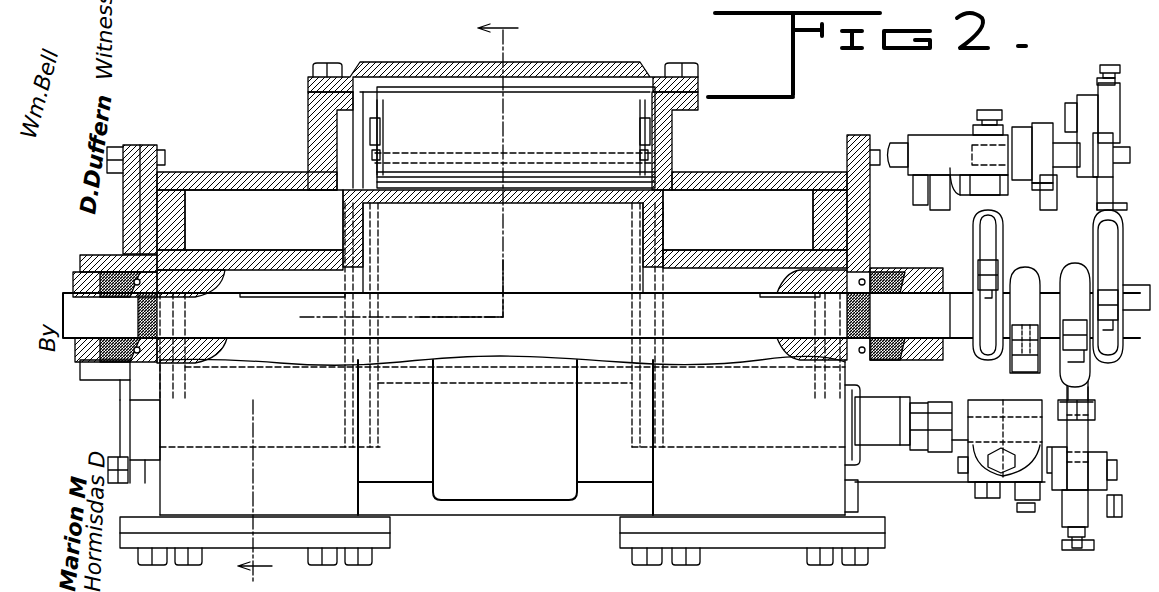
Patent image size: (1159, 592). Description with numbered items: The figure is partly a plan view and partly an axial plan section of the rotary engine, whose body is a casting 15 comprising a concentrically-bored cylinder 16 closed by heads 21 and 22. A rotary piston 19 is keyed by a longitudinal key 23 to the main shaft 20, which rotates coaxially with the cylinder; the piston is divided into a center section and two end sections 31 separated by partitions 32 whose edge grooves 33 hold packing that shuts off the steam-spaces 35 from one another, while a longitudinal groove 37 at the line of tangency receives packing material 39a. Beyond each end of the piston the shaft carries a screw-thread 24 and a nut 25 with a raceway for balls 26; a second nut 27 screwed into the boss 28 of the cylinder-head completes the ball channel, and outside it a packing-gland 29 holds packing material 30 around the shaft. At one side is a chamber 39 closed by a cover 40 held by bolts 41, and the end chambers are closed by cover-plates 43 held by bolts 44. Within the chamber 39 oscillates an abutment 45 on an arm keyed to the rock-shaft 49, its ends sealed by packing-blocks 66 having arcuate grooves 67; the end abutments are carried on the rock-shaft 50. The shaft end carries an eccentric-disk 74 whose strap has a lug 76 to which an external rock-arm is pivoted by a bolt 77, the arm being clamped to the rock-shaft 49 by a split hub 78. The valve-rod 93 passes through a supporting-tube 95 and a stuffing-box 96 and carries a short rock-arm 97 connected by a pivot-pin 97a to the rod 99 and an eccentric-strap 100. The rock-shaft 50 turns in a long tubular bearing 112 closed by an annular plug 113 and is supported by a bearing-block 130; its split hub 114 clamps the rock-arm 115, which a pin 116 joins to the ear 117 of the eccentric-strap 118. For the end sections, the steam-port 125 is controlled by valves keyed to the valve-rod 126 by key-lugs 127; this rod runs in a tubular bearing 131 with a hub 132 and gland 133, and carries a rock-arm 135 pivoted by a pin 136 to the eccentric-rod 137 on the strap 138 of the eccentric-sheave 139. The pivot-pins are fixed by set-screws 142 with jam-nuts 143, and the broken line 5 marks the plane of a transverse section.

The section line 5 is at (380, 300).
The casting 15 is at (412, 470).
The cylinder 16 is at (243, 172).
The rotary piston 19 is at (200, 252).
The main shaft 20 is at (560, 305).
The cylinder head 21 is at (862, 135).
The cylinder head 22 is at (138, 145).
The longitudinal key 23 is at (245, 297).
The screw-thread 24 is at (180, 317).
The nut 25 is at (135, 275).
The balls 26 is at (135, 265).
The nut 27 is at (118, 378).
The boss 28 is at (80, 263).
The packing-gland 29 is at (73, 283).
The packing material 30 is at (73, 290).
The end section 31 is at (295, 262).
The partition 32 is at (195, 190).
The groove 33 is at (200, 172).
The steam-space 35 is at (499, 220).
The longitudinal groove 37 is at (538, 203).
The chamber 39 is at (570, 88).
The packing material 39a is at (475, 203).
The cover 40 is at (434, 62).
The bolts 41 is at (328, 63).
The cover-plate 43 is at (275, 545).
The bolts 44 is at (188, 565).
The abutment 45 is at (400, 90).
The rock-shaft 49 is at (1050, 200).
The rock-shaft 50 is at (978, 485).
The packing-block 66 is at (380, 160).
The arcuate groove 67 is at (380, 165).
The eccentric-disk 74 is at (978, 250).
The lug 76 is at (980, 195).
The bolt 77 is at (1053, 175).
The split hub 78 is at (1010, 200).
The valve-rod 93 is at (1113, 180).
The supporting-tube 95 is at (928, 138).
The stuffing-box 96 is at (1030, 127).
The rock-arm 97 is at (1085, 96).
The pivot-pin 97a is at (1066, 105).
The rod 99 is at (1113, 195).
The eccentric-strap 100 is at (1115, 262).
The tubular bearing 112 is at (890, 445).
The annular plug 113 is at (845, 458).
The split hub 114 is at (1006, 440).
The rock-arm 115 is at (952, 445).
The pin 116 is at (1060, 492).
The ear 117 is at (1028, 512).
The eccentric-strap 118 is at (1015, 380).
The steam-port 125 is at (894, 582).
The valve-rod 126 is at (1117, 472).
The key-lugs 127 is at (721, 582).
The bearing-block 130 is at (145, 450).
The tubular bearing 131 is at (930, 490).
The hub 132 is at (845, 498).
The gland 133 is at (998, 500).
The rock-arm 135 is at (1090, 527).
The pin 136 is at (1120, 514).
The eccentric-rod 137 is at (1088, 443).
The strap 138 is at (1095, 403).
The eccentric-sheave 139 is at (1092, 368).
The set-screws 142 is at (990, 110).
The jam-nuts 143 is at (976, 125).